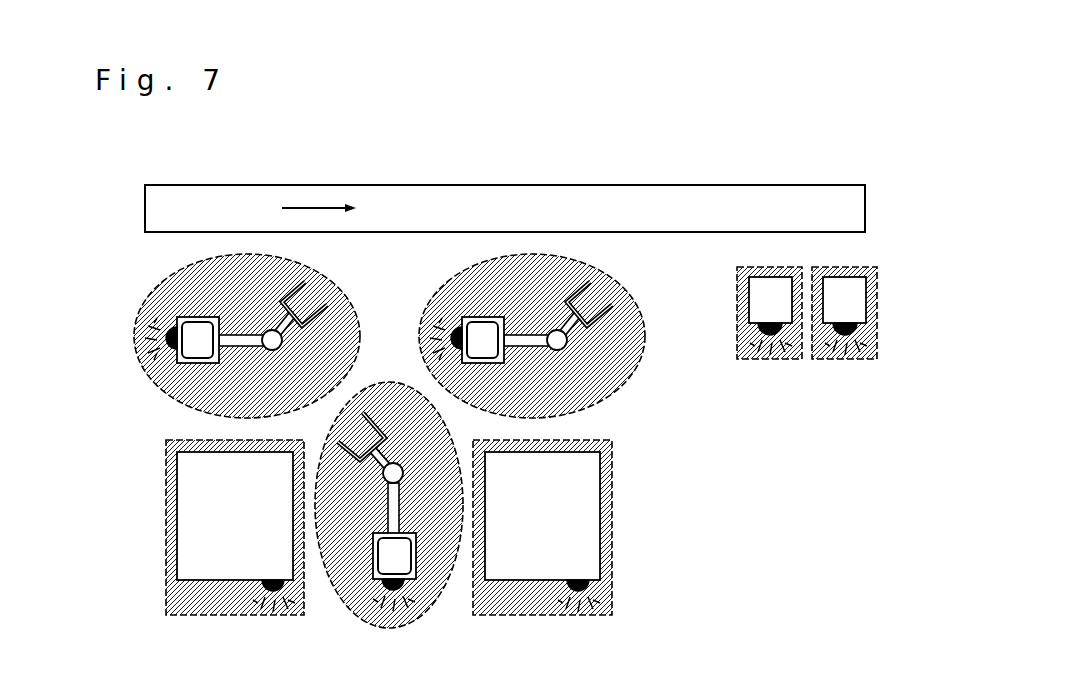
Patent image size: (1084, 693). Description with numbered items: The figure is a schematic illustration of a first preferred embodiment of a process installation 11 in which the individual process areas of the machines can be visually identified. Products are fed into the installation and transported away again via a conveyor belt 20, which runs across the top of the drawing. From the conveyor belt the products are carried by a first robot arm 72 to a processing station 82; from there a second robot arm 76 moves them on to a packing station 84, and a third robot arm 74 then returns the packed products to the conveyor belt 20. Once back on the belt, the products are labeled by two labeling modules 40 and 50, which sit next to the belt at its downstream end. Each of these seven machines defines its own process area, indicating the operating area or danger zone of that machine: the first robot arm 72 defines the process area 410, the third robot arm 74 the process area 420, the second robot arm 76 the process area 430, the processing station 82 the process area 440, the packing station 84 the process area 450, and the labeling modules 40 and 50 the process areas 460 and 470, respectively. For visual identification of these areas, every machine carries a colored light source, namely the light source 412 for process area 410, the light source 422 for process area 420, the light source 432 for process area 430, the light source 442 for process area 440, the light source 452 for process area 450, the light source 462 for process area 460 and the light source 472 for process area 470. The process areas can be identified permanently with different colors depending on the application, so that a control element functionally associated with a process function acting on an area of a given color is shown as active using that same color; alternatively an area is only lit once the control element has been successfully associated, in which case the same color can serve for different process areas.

The process installation 11 is at (438, 116).
The conveyor belt 20 is at (559, 184).
The labeling module 40 is at (760, 276).
The labeling module 50 is at (836, 276).
The first robot arm 72 is at (197, 317).
The third robot arm 74 is at (482, 317).
The second robot arm 76 is at (417, 565).
The processing station 82 is at (177, 498).
The packing station 84 is at (601, 463).
The process area 410 is at (165, 392).
The colored light source 412 is at (160, 330).
The process area 420 is at (612, 395).
The colored light source 422 is at (445, 330).
The process area 430 is at (336, 592).
The colored light source 432 is at (400, 590).
The process area 440 is at (166, 557).
The colored light source 442 is at (269, 597).
The process area 450 is at (612, 521).
The colored light source 452 is at (594, 588).
The process area 460 is at (760, 360).
The colored light source 462 is at (757, 331).
The process area 470 is at (835, 360).
The colored light source 472 is at (855, 337).